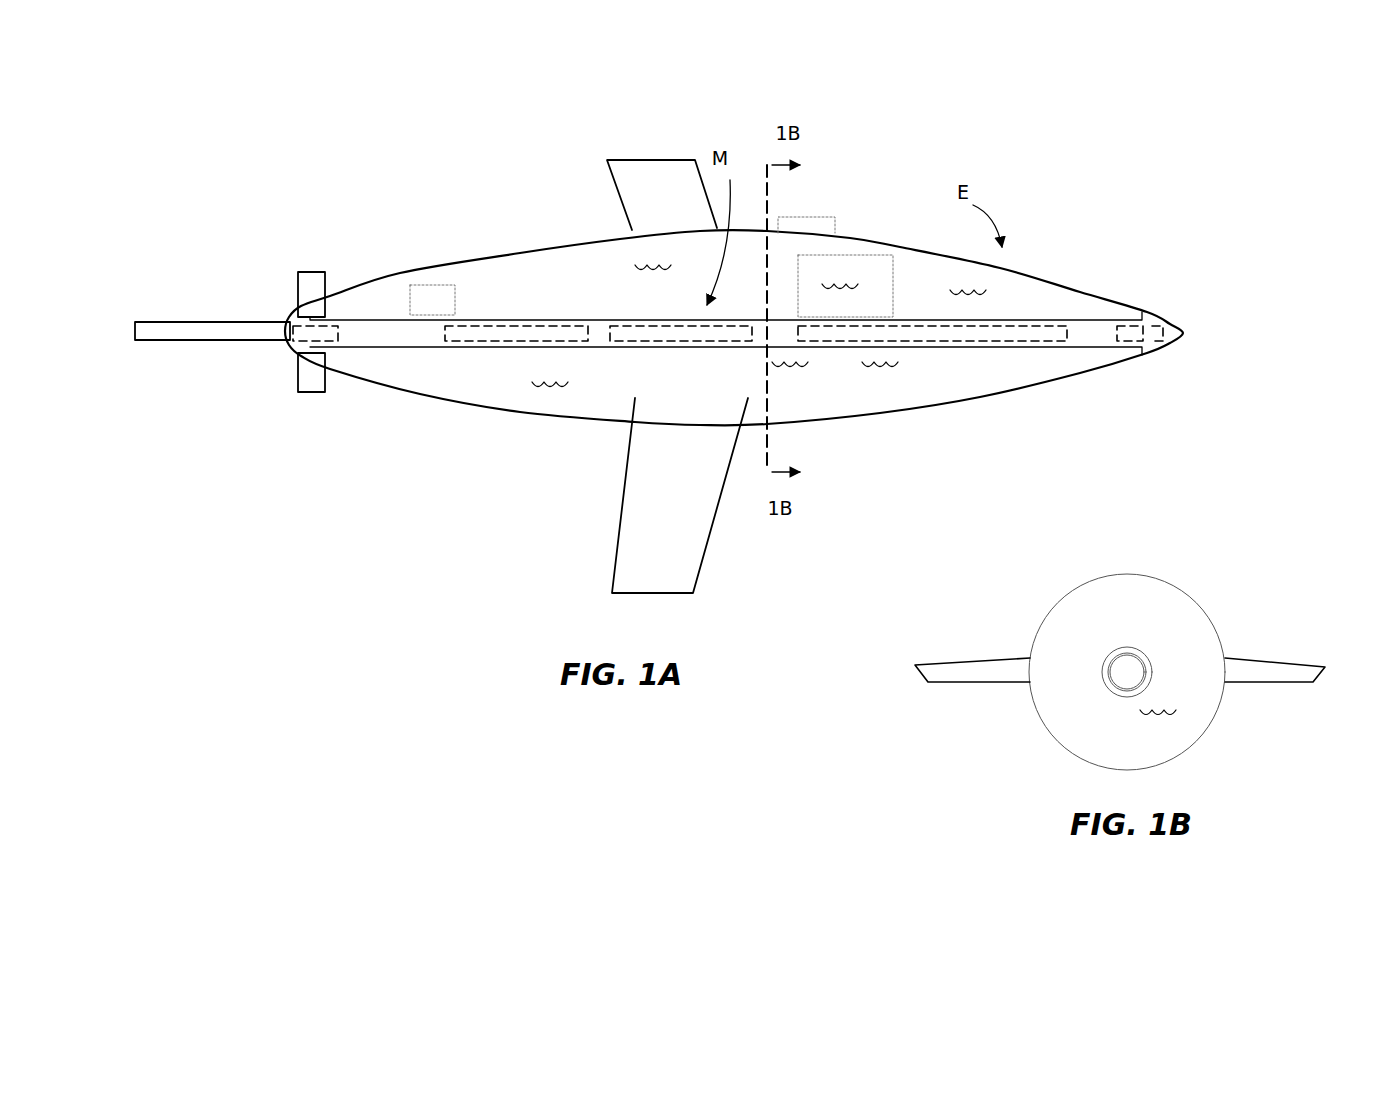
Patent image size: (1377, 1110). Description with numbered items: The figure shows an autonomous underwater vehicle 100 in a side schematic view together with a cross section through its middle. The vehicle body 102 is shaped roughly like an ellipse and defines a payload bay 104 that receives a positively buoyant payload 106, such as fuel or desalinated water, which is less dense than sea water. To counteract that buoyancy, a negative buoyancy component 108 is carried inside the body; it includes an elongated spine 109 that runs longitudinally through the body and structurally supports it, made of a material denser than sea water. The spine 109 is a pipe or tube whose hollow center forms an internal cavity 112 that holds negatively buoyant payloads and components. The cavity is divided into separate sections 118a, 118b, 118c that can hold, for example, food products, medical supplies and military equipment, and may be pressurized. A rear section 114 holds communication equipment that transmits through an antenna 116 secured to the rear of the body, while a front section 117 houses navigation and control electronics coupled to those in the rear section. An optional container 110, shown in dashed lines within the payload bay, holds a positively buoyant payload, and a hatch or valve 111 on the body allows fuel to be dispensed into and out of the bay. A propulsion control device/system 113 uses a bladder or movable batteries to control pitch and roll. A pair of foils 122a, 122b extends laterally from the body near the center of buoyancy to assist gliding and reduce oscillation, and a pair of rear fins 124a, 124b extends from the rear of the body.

In FIG. 1A, the autonomous underwater vehicle 100 is at (387, 122).
In FIG. 1B, the autonomous underwater vehicle 100 is at (1270, 628).
In FIG. 1A, the vehicle body 102 is at (575, 238).
In FIG. 1B, the vehicle body 102 is at (1202, 597).
In FIG. 1A, the payload bay 104 is at (532, 278).
In FIG. 1B, the payload bay 104 is at (1075, 632).
In FIG. 1A, the positively buoyant payload 106 is at (561, 293).
In FIG. 1A, the negative buoyancy component 108 is at (505, 313).
In FIG. 1B, the negative buoyancy component 108 is at (1122, 640).
In FIG. 1A, the elongated spine 109 is at (375, 353).
In FIG. 1B, the elongated spine 109 is at (1095, 667).
In FIG. 1A, the container 110 is at (868, 255).
In FIG. 1A, the hatch or valve 111 is at (822, 215).
In FIG. 1A, the internal cavity 112 is at (425, 335).
In FIG. 1B, the internal cavity 112 is at (1128, 673).
In FIG. 1A, the propulsion control device/system 113 is at (403, 297).
In FIG. 1A, the rear section 114 is at (305, 327).
In FIG. 1A, the antenna 116 is at (168, 338).
In FIG. 1B, the antenna 116 is at (1169, 687).
In FIG. 1A, the front section 117 is at (1160, 327).
In FIG. 1A, the cavity section 118a is at (537, 335).
In FIG. 1A, the cavity section 118b is at (652, 336).
In FIG. 1A, the cavity section 118c is at (992, 333).
In FIG. 1A, the foil 122a is at (645, 172).
In FIG. 1B, the foil 122a is at (1303, 685).
In FIG. 1A, the foil 122b is at (633, 552).
In FIG. 1B, the foil 122b is at (915, 675).
In FIG. 1A, the rear fin 124a is at (312, 287).
In FIG. 1A, the rear fin 124b is at (312, 382).